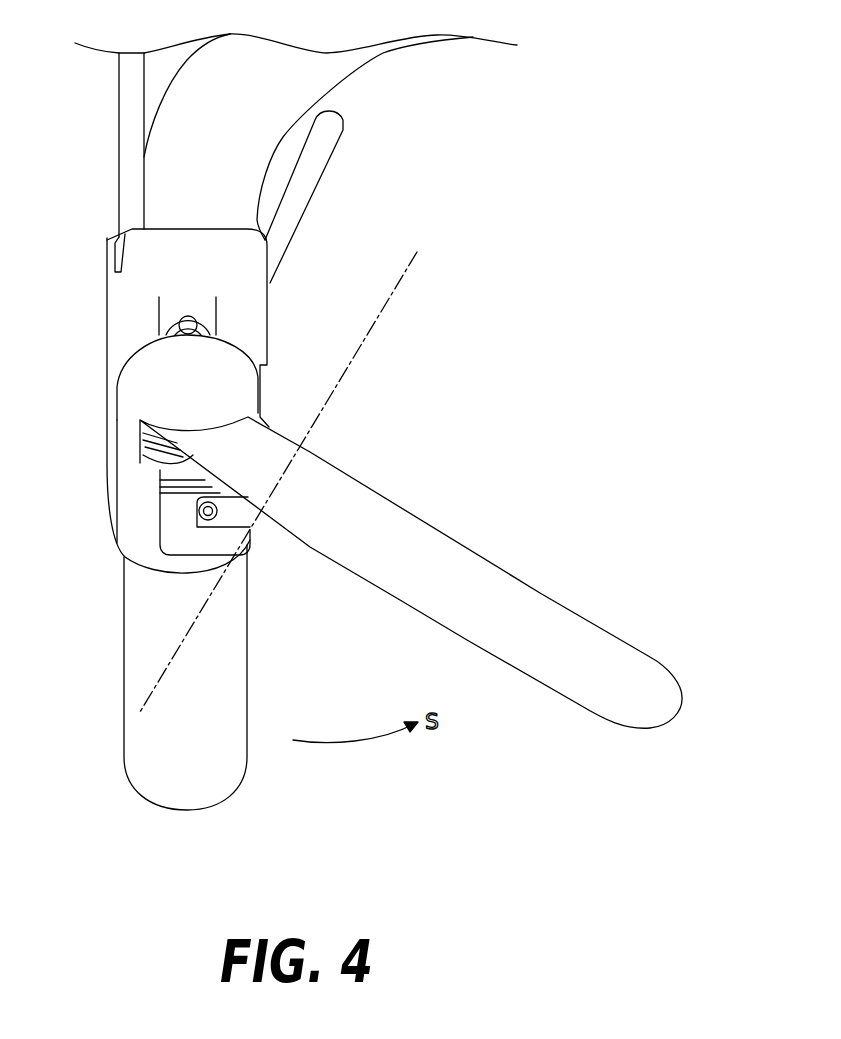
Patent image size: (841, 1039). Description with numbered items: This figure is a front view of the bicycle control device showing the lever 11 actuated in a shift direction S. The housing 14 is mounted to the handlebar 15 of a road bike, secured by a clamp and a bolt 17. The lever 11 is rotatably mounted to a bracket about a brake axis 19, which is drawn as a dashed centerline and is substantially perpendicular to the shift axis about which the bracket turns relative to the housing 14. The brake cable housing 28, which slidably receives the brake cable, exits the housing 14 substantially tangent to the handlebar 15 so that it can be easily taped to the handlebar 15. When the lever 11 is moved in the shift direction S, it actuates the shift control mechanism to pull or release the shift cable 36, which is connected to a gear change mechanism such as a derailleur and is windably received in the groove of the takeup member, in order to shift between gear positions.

The lever 11 is at (420, 543).
The housing 14 is at (252, 318).
The handlebar 15 is at (383, 53).
The bolt 17 is at (168, 322).
The brake axis 19 is at (408, 270).
The brake cable housing 28 is at (130, 78).
The shift cable 36 is at (285, 222).